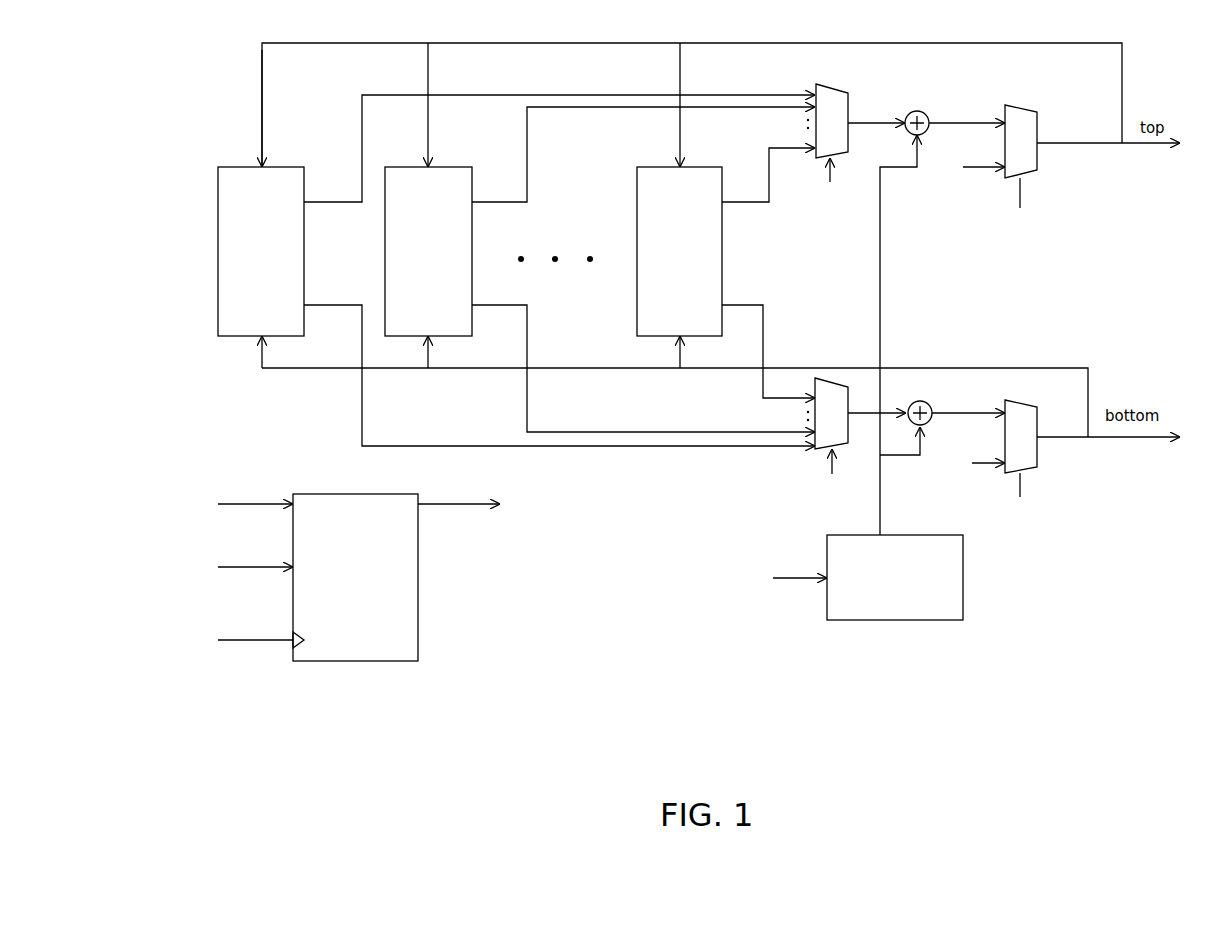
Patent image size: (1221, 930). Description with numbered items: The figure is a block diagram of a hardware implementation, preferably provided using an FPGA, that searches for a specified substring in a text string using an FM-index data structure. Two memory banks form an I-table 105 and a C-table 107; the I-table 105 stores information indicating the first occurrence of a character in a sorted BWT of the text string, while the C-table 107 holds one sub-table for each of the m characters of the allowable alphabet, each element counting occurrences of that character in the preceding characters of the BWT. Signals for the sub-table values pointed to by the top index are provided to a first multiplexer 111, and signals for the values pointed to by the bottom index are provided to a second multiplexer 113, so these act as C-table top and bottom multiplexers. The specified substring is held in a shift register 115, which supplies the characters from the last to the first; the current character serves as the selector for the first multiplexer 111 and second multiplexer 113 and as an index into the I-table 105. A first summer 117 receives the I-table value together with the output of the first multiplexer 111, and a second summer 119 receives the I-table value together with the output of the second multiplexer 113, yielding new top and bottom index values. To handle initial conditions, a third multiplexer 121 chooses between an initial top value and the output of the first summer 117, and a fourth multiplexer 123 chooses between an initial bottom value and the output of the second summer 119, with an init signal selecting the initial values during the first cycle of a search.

The I-table 105 is at (932, 622).
The C-table 107 is at (202, 366).
The first multiplexer 111 is at (836, 95).
The second multiplexer 113 is at (843, 451).
The shift register 115 is at (418, 608).
The first summer 117 is at (907, 110).
The second summer 119 is at (923, 404).
The third multiplexer 121 is at (1040, 171).
The fourth multiplexer 123 is at (1025, 404).